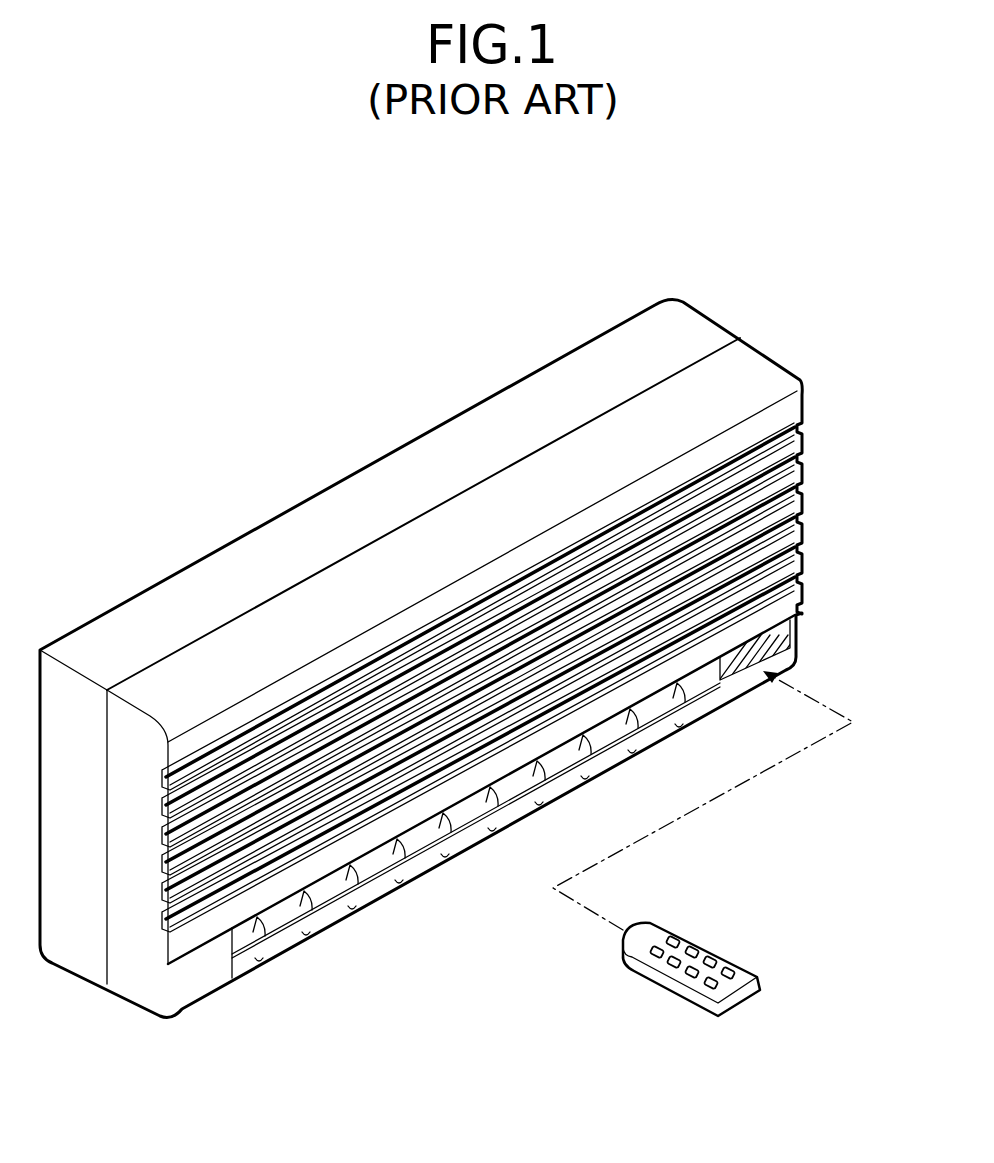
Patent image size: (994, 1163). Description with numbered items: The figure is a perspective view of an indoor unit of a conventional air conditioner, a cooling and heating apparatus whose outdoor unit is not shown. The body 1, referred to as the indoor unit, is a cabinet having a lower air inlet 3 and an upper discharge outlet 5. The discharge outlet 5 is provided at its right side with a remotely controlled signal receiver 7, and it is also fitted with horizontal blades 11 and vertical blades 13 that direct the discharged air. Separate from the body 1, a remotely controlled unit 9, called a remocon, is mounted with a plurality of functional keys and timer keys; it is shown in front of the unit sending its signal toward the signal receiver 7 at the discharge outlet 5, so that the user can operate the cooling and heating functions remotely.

The body 1 is at (464, 664).
The lower air inlet 3 is at (712, 566).
The upper discharge outlet 5 is at (560, 821).
The remotely controlled signal receiver 7 is at (782, 635).
The remotely controlled unit 9 is at (706, 958).
The horizontal blades 11 is at (443, 863).
The vertical blades 13 is at (283, 952).